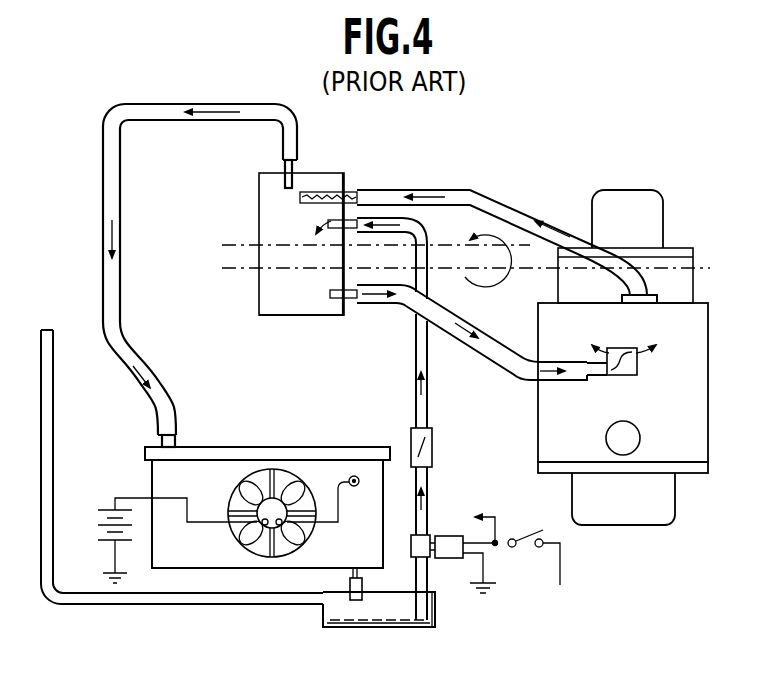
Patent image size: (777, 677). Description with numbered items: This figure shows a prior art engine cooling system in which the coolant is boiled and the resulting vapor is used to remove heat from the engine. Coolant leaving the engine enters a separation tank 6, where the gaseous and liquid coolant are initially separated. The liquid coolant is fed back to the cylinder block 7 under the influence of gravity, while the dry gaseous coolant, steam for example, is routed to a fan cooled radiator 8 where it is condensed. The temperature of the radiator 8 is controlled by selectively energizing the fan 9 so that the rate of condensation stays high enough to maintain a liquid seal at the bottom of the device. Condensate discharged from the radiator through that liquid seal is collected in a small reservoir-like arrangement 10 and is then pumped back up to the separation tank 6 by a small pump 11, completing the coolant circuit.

The separation tank 6 is at (259, 197).
The cylinder block 7 is at (673, 258).
The fan cooled radiator 8 is at (163, 478).
The fan 9 is at (253, 538).
The reservoir-like arrangement 10 is at (346, 627).
The pump 11 is at (453, 560).